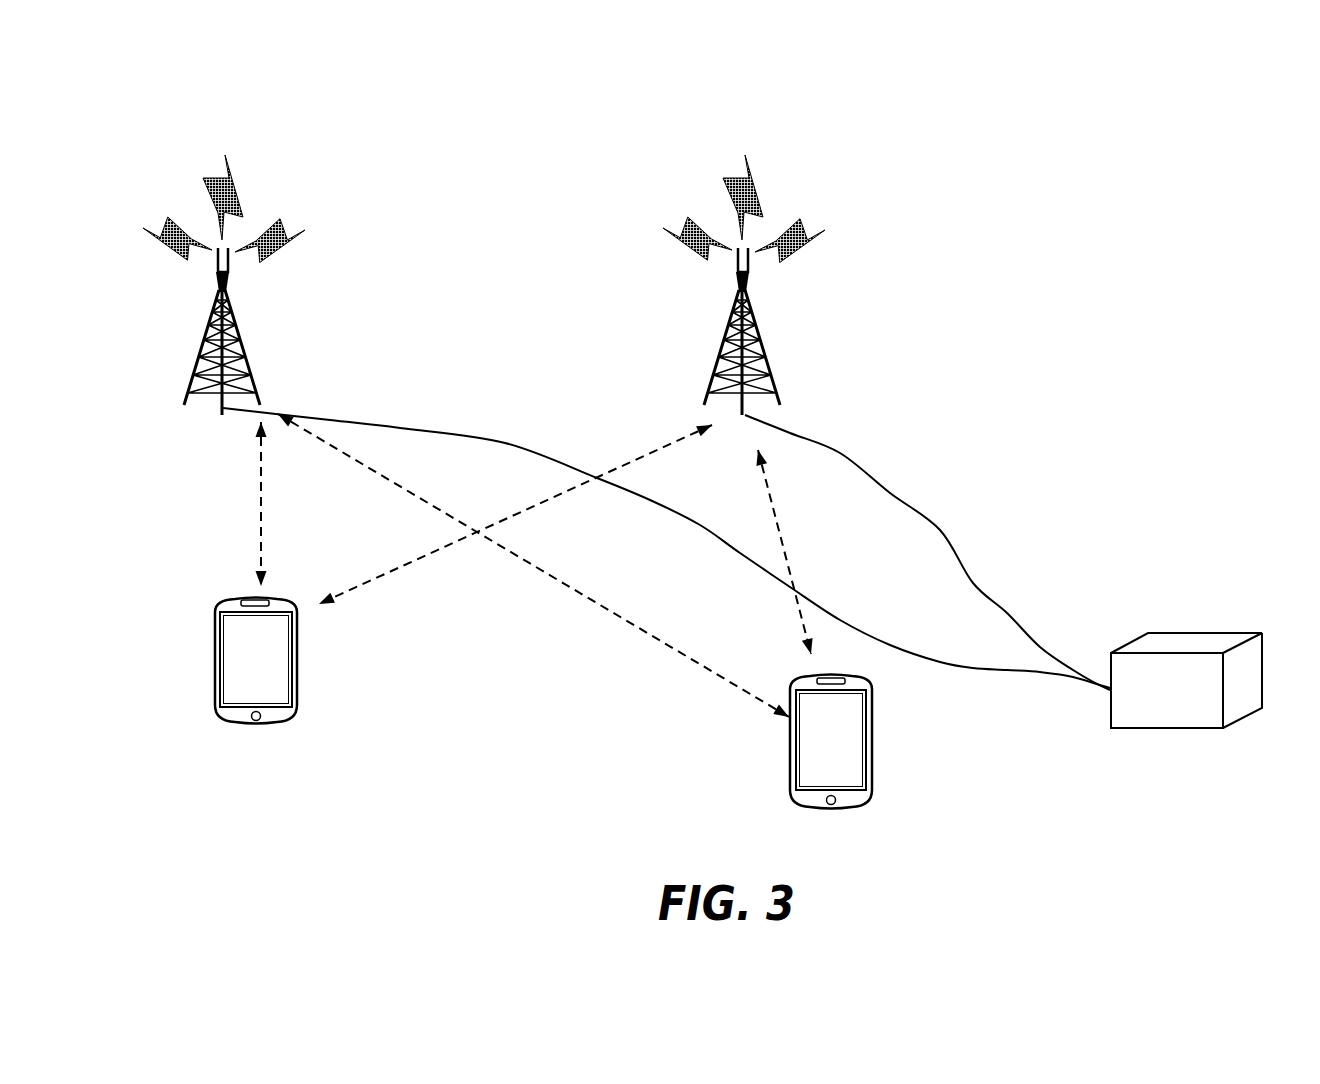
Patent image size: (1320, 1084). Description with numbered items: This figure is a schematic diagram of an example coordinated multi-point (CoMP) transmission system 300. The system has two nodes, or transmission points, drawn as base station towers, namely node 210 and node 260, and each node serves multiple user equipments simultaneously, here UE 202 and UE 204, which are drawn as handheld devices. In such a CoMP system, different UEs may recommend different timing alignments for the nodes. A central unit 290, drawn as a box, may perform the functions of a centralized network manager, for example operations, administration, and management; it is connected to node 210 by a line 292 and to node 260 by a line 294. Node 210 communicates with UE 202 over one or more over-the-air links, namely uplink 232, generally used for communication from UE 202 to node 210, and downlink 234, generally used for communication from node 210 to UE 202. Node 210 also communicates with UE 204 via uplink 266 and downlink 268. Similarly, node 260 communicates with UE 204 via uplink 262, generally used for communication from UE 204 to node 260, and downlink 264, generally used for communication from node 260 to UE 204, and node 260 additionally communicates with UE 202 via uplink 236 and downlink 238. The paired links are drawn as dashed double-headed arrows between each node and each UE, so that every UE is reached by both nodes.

The CoMP transmission system 300 is at (484, 312).
The node 210 is at (240, 337).
The node 260 is at (757, 343).
The UE 202 is at (298, 677).
The UE 204 is at (873, 740).
The central unit 290 is at (1185, 633).
The backhaul link between central unit and first base station 292 is at (505, 443).
The backhaul link between central unit and second base station 294 is at (937, 527).
The uplink 232 is at (299, 504).
The downlink 234 is at (262, 532).
The uplink 236 is at (515, 539).
The downlink 238 is at (400, 566).
The uplink 262 is at (810, 552).
The downlink 264 is at (786, 528).
The uplink 266 is at (533, 565).
The downlink 268 is at (620, 617).